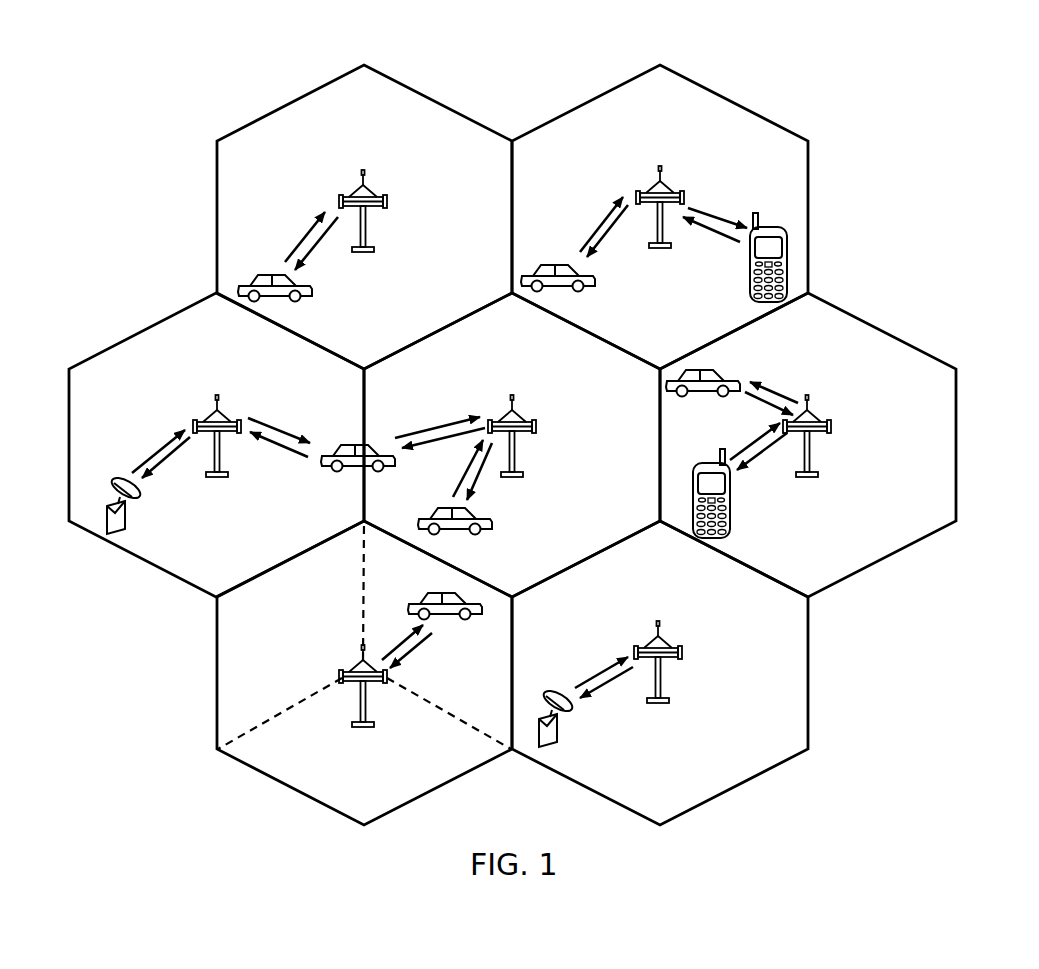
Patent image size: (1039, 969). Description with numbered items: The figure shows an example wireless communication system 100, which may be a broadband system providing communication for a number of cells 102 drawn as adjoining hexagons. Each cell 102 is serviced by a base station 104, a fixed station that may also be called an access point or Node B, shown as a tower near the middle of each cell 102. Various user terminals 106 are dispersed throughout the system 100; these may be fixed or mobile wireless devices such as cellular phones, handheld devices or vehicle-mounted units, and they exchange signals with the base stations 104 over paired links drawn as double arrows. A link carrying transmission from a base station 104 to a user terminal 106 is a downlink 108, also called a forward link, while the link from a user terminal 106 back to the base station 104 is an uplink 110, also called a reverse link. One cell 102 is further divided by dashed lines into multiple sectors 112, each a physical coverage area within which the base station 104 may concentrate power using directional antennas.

The wireless communication system 100 is at (944, 143).
The cell 102 is at (300, 97).
The base station 104 is at (363, 181).
The user terminal 106 is at (311, 296).
The downlink 108 is at (315, 250).
The uplink 110 is at (312, 237).
The sector 112 is at (417, 783).